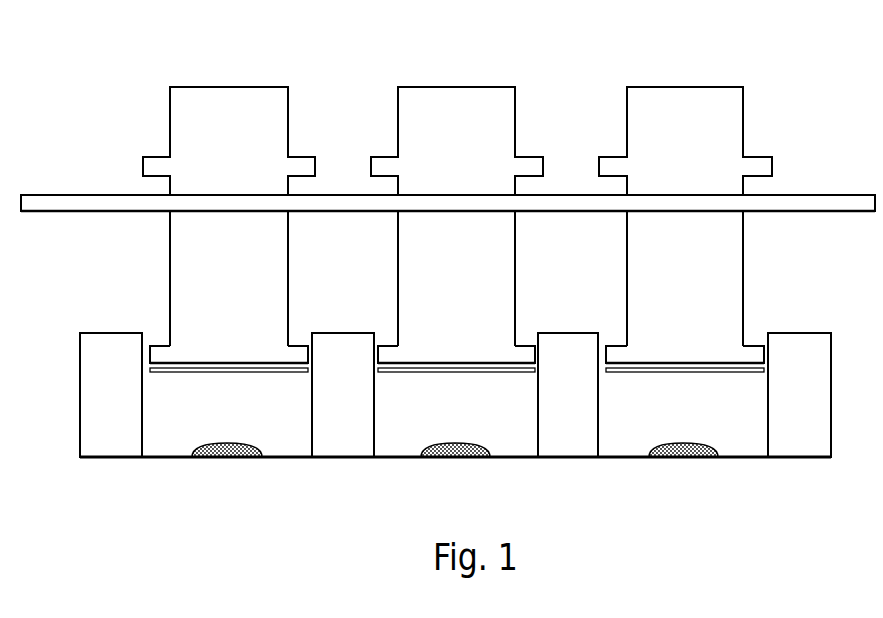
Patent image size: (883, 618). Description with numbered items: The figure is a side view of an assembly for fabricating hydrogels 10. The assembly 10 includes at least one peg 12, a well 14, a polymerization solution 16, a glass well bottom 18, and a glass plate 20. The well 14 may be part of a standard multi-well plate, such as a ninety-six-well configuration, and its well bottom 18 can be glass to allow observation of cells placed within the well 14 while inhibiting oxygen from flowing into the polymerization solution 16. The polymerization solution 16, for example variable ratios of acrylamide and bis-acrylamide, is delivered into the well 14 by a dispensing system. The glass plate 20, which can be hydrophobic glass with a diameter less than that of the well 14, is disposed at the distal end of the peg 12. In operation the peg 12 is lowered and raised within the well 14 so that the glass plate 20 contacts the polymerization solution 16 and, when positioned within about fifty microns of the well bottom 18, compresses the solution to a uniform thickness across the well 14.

The assembly for fabricating hydrogels 10 is at (80, 99).
The peg 12 is at (728, 119).
The well 14 is at (613, 438).
The polymerization solution 16 is at (683, 457).
The glass well bottom 18 is at (747, 457).
The glass plate 20 is at (683, 372).